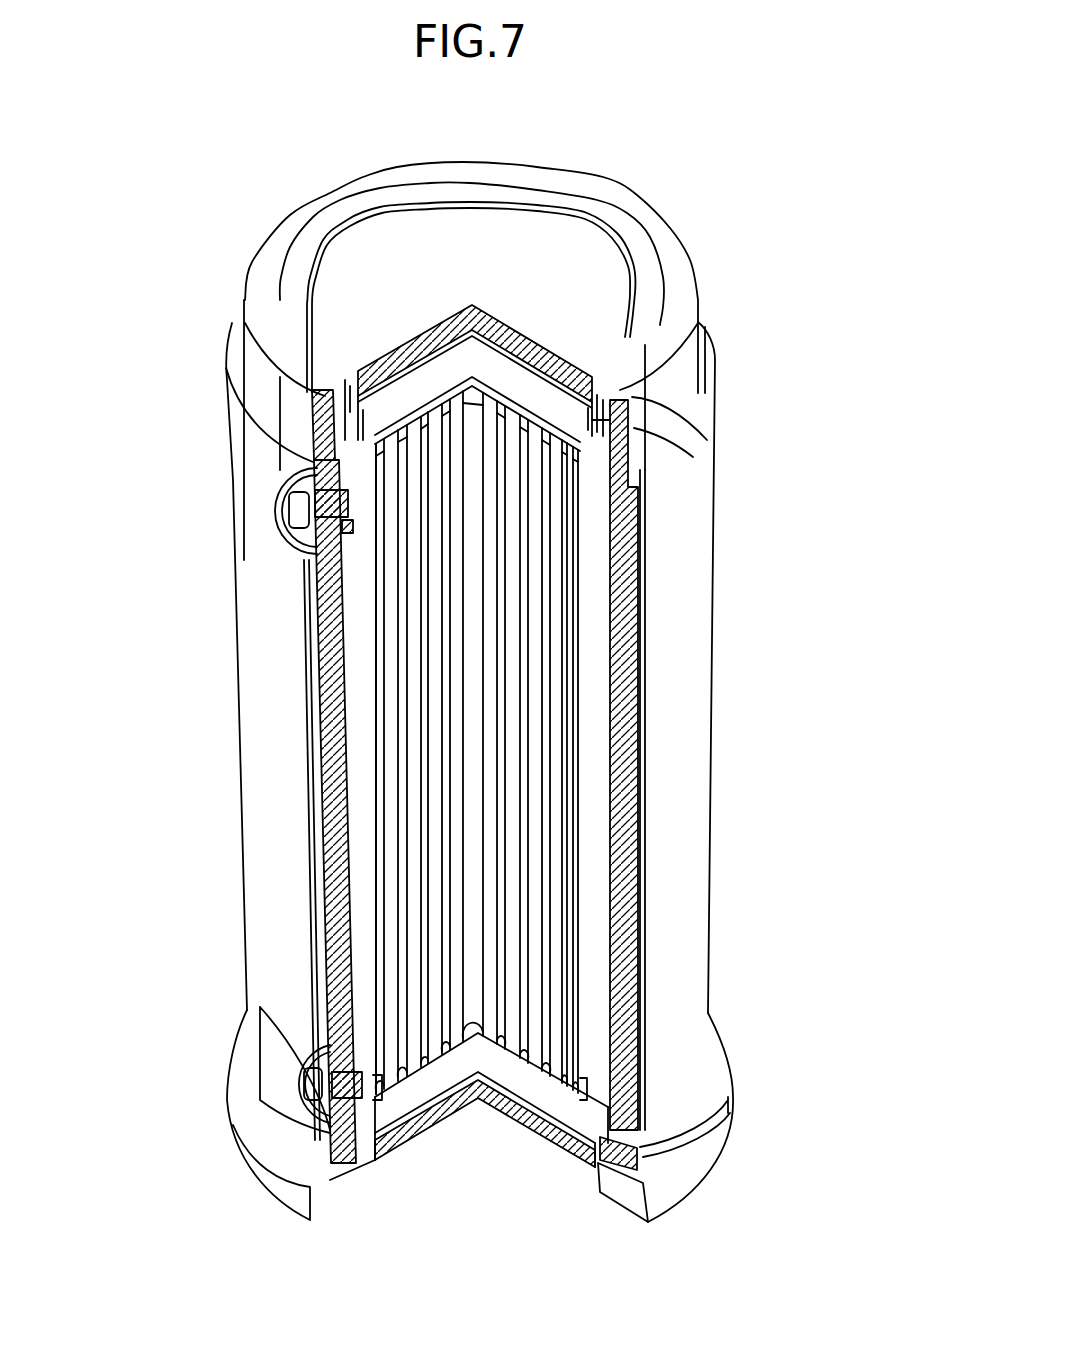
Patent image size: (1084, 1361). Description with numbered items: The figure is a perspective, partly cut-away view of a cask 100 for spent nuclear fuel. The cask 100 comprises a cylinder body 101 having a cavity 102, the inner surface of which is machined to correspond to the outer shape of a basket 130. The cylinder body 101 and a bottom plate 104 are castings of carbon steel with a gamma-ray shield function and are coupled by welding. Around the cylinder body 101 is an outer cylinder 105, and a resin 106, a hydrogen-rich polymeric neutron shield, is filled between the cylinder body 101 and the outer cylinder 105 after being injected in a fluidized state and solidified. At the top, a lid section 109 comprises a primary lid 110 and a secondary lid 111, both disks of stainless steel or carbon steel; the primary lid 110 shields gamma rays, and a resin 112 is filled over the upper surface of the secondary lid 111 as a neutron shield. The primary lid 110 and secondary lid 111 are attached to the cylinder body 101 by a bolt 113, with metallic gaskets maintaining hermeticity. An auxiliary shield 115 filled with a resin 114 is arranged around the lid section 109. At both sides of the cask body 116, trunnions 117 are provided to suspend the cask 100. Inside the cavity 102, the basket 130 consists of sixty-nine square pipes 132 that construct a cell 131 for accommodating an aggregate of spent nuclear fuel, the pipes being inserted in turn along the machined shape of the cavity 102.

The cask 100 is at (238, 172).
The cylinder body 101 is at (612, 675).
The cavity 102 is at (385, 742).
The bottom plate 104 is at (400, 1117).
The outer cylinder 105 is at (705, 568).
The resin 106 is at (640, 745).
The lid section 109 is at (562, 257).
The primary lid 110 is at (548, 390).
The secondary lid 111 is at (600, 264).
The resin 112 is at (447, 316).
The bolt 113 is at (600, 426).
The resin 114 is at (300, 450).
The auxiliary shield 115 is at (245, 299).
The cask body 116 is at (222, 680).
The trunnion 117 is at (285, 507).
The basket 130 is at (630, 740).
The cell 131 is at (540, 852).
The square pipe 132 is at (555, 937).